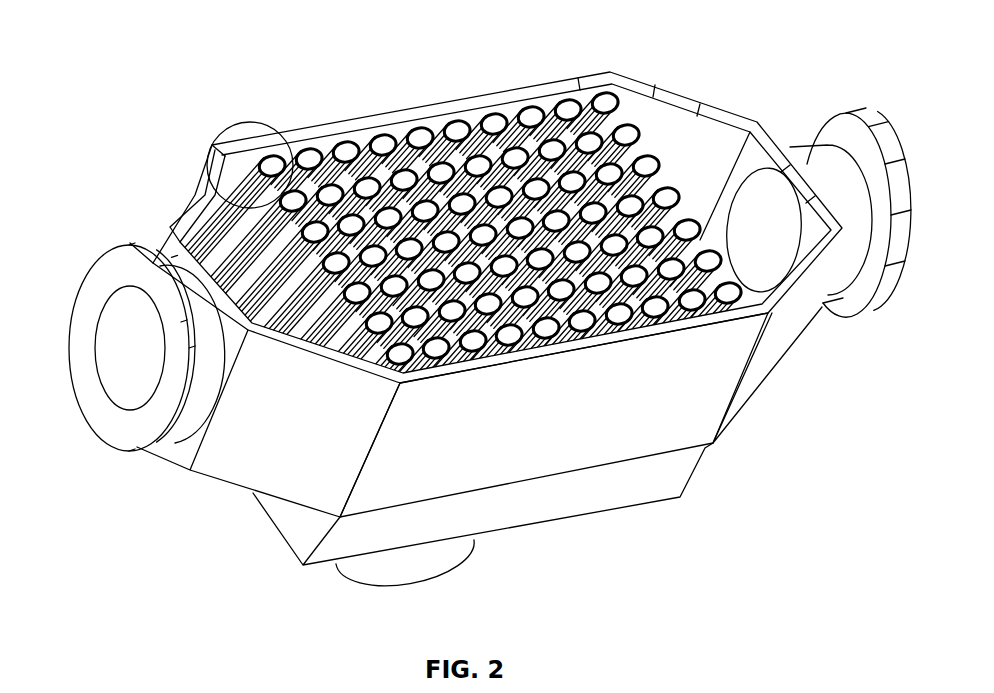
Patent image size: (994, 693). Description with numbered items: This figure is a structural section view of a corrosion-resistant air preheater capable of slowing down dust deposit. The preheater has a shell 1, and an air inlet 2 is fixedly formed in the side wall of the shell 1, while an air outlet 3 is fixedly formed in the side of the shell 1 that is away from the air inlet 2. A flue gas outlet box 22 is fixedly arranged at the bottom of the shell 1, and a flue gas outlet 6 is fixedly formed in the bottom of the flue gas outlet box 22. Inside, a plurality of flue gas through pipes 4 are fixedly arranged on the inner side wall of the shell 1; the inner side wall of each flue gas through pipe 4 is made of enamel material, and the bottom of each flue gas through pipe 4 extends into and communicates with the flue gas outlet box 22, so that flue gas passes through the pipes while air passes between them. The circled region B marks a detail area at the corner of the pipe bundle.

The shell 1 is at (500, 88).
The air inlet 2 is at (113, 253).
The air outlet 3 is at (833, 162).
The flue gas through pipe 4 is at (697, 300).
The flue gas outlet box 22 is at (650, 478).
The flue gas outlet 6 is at (435, 553).
The detail region B is at (208, 160).